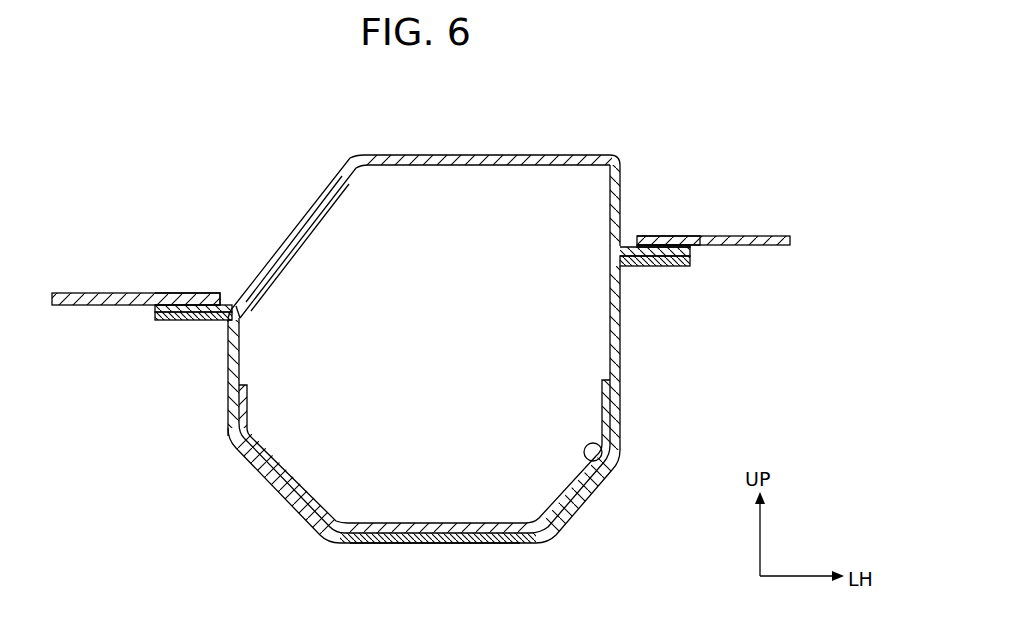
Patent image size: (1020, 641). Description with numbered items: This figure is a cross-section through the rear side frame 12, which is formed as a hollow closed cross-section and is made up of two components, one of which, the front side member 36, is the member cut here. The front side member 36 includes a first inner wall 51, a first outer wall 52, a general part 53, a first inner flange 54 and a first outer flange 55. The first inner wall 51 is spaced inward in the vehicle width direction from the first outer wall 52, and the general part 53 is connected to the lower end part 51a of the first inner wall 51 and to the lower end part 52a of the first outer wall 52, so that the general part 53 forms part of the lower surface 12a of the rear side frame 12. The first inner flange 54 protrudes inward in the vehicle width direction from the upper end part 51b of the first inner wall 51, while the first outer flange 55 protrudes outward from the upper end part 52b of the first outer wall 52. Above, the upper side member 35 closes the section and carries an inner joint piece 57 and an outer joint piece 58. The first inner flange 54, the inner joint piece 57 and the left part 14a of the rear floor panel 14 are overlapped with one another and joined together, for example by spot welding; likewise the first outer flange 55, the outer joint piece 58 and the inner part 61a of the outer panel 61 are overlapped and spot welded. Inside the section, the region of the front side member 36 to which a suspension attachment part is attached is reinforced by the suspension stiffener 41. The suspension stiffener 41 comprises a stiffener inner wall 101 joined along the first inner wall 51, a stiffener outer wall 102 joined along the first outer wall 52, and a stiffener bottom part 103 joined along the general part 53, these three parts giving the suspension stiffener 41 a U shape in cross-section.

The rear side frame 12 is at (326, 149).
The lower surface 12a is at (381, 545).
The rear floor panel 14 is at (135, 251).
The left part 14a is at (178, 294).
The upper side member 35 is at (439, 148).
The front side member 36 is at (222, 440).
The suspension stiffener 41 is at (466, 454).
The first inner wall 51 is at (228, 375).
The lower end part 51a is at (318, 538).
The upper end part 51b is at (245, 315).
The first outer wall 52 is at (622, 355).
The lower end part 52a is at (567, 534).
The upper end part 52b is at (612, 258).
The general part 53 is at (452, 545).
The first inner flange 54 is at (190, 322).
The first outer flange 55 is at (671, 267).
The inner joint piece 57 is at (201, 306).
The outer joint piece 58 is at (656, 244).
The outer panel 61 is at (715, 198).
The inner part 61a is at (684, 237).
The stiffener inner wall 101 is at (248, 404).
The stiffener outer wall 102 is at (605, 461).
The stiffener bottom part 103 is at (434, 523).